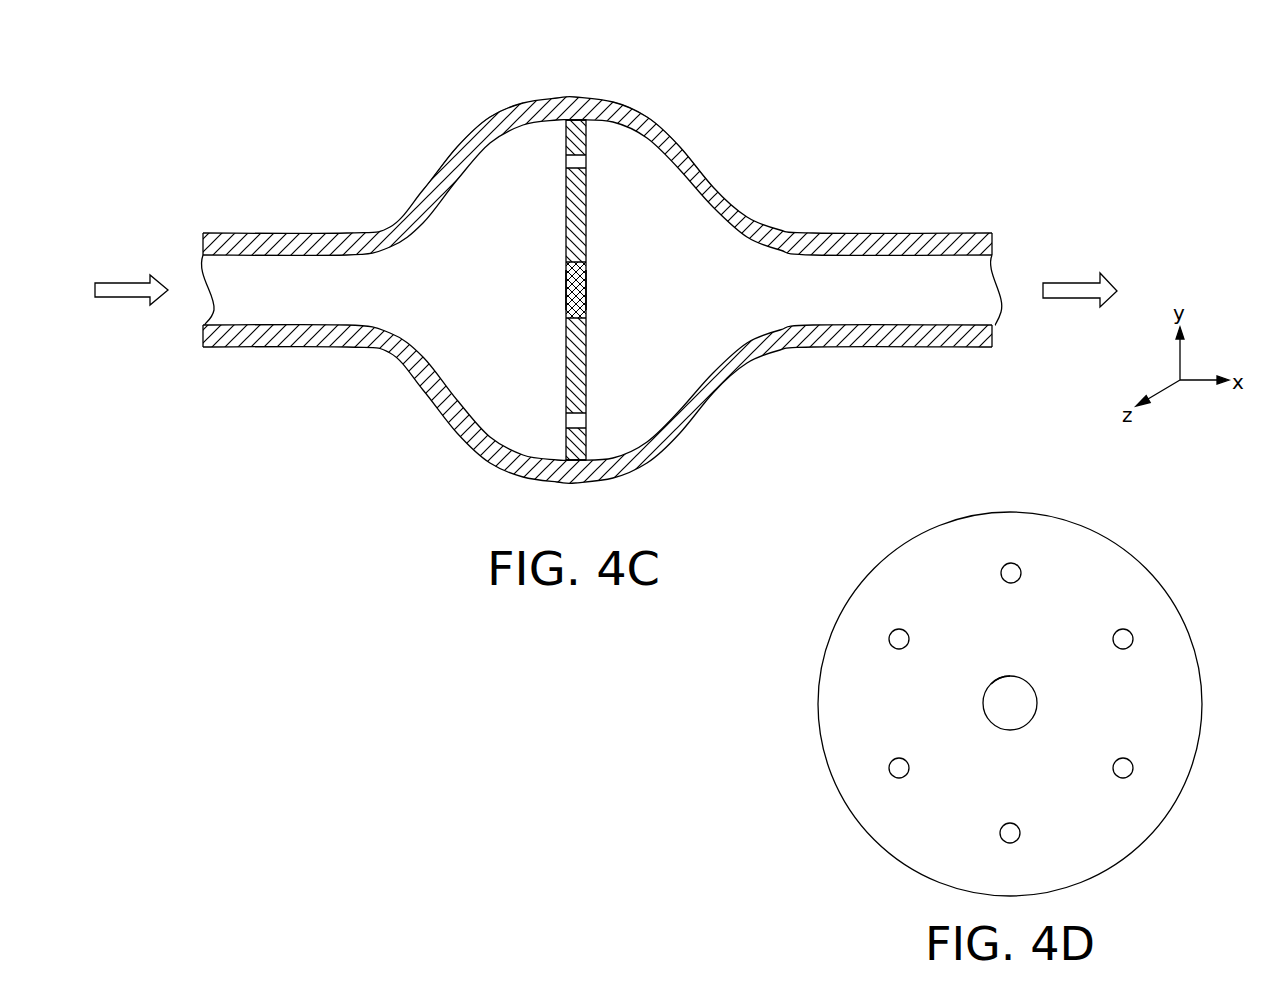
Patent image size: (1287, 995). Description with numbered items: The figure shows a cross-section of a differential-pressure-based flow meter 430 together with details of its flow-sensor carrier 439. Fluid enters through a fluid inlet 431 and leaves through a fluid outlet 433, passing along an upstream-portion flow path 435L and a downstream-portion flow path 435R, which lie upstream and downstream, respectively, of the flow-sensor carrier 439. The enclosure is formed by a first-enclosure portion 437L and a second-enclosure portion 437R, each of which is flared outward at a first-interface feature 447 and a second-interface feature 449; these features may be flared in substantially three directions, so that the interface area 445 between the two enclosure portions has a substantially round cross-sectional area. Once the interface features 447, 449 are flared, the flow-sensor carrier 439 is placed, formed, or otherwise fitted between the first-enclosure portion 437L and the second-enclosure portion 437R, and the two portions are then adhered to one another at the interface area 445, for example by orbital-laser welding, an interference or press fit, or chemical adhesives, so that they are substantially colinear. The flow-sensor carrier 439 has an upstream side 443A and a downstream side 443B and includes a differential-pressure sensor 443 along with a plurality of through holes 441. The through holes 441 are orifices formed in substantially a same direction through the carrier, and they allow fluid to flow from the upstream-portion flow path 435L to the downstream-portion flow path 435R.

In FIG. 4C, the differential-pressure-based flow meter 430 is at (228, 172).
In FIG. 4C, the fluid inlet 431 is at (108, 283).
In FIG. 4C, the fluid outlet 433 is at (1055, 283).
In FIG. 4C, the upstream-portion flow path 435L is at (287, 307).
In FIG. 4C, the downstream-portion flow path 435R is at (782, 288).
In FIG. 4C, the first-enclosure portion 437L is at (345, 233).
In FIG. 4C, the second-enclosure portion 437R is at (812, 233).
In FIG. 4C, the flow-sensor carrier 439 is at (587, 215).
In FIG. 4D, the flow-sensor carrier 439 is at (1112, 540).
In FIG. 4C, the through holes 441 is at (566, 162).
In FIG. 4D, the through holes 441 is at (1014, 563).
In FIG. 4C, the differential-pressure sensor 443 is at (548, 314).
In FIG. 4D, the differential-pressure sensor 443 is at (1020, 705).
In FIG. 4C, the upstream side 443A is at (566, 290).
In FIG. 4D, the upstream side 443A is at (1015, 683).
In FIG. 4C, the downstream side 443B is at (587, 290).
In FIG. 4C, the interface area 445 is at (578, 125).
In FIG. 4C, the first-interface feature 447 is at (512, 102).
In FIG. 4C, the second-interface feature 449 is at (643, 100).